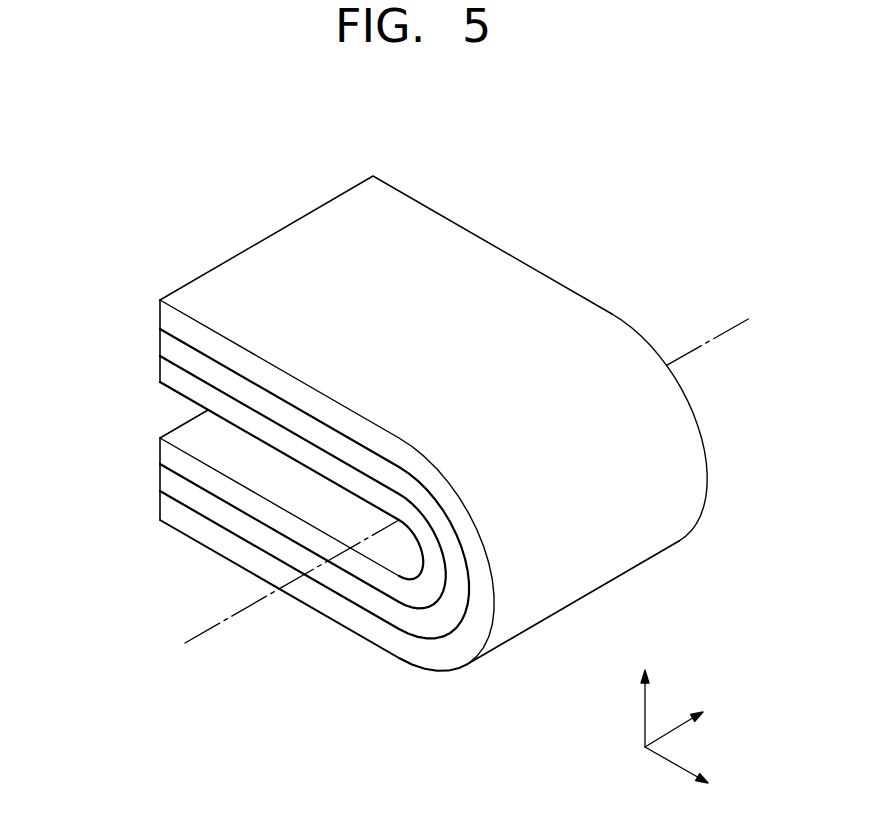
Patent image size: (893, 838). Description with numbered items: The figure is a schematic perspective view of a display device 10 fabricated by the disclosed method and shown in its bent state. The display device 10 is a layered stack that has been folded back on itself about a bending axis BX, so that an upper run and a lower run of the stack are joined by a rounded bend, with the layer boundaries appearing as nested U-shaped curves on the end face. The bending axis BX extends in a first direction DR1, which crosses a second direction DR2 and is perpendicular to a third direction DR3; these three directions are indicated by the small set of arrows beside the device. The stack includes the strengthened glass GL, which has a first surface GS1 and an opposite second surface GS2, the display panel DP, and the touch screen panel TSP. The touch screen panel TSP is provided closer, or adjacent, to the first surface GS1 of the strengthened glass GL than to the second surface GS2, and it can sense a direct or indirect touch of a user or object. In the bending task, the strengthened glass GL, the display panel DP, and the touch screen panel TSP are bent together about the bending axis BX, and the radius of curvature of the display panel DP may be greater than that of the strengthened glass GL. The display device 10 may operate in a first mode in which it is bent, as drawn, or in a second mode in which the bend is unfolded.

The display device 10 is at (374, 398).
The second surface of the strengthened glass GS2 is at (181, 306).
The strengthened glass GL is at (165, 315).
The display panel DP is at (165, 342).
The first surface of the strengthened glass GS1 is at (165, 369).
The touch screen panel TSP is at (170, 383).
The bending axis BX is at (451, 490).
The first direction DR1 is at (693, 725).
The second direction DR2 is at (698, 772).
The third direction DR3 is at (646, 696).